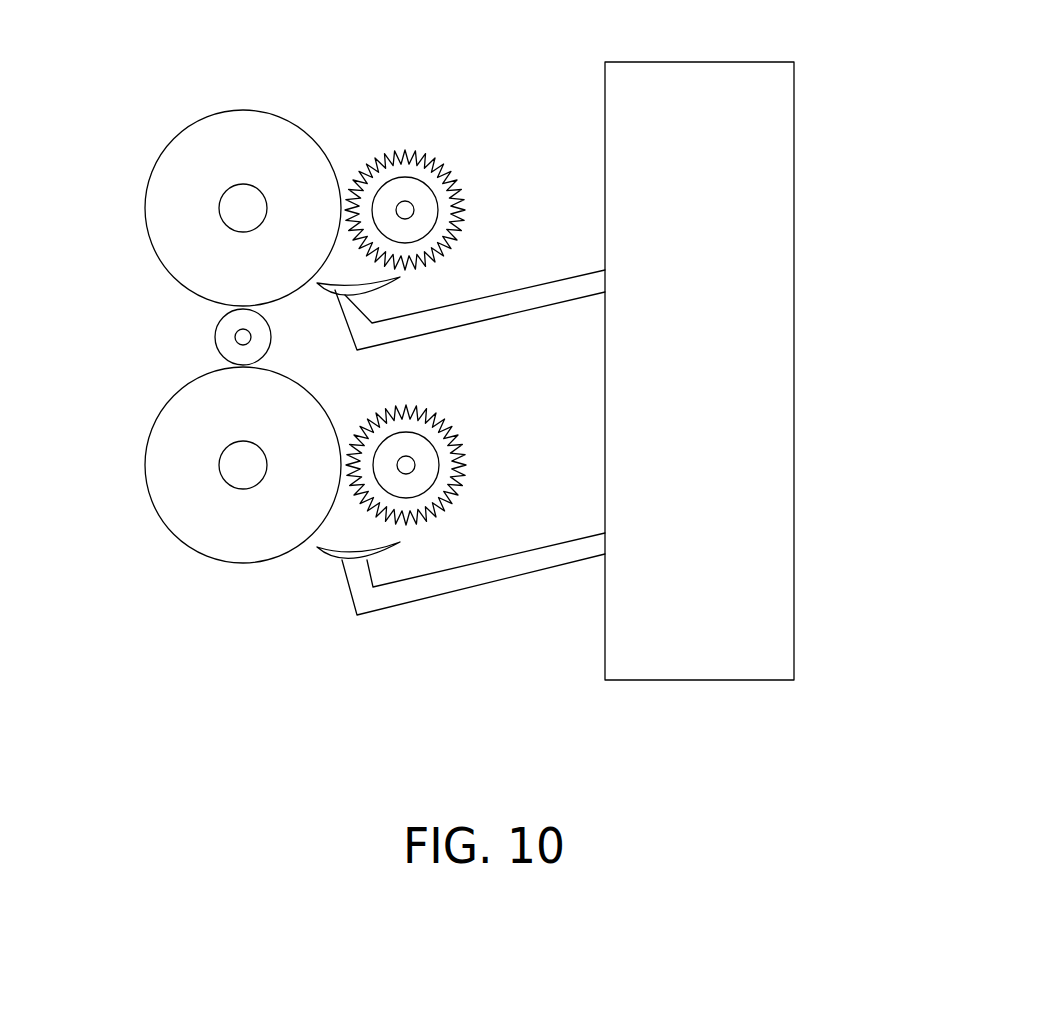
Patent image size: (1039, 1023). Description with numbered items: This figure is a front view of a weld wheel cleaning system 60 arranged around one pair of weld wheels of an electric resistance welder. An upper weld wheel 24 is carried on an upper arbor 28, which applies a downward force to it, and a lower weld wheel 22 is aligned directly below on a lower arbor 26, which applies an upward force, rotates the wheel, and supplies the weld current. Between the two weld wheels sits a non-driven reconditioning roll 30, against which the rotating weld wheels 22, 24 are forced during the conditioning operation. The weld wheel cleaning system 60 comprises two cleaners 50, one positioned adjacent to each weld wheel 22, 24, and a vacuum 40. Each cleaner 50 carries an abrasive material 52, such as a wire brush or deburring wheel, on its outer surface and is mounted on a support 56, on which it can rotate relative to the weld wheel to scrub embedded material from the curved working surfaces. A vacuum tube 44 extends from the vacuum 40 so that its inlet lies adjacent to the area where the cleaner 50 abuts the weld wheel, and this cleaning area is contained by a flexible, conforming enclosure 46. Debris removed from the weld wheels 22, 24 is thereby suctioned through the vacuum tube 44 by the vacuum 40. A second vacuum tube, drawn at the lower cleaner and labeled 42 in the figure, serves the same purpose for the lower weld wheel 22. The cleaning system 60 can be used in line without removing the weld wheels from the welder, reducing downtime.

The lower weld wheel 22 is at (200, 518).
The upper weld wheel 24 is at (173, 192).
The lower arbor 26 is at (238, 464).
The upper arbor 28 is at (241, 205).
The reconditioning roll 30 is at (230, 334).
The vacuum 40 is at (763, 243).
The lower chute 42 is at (440, 583).
The vacuum tube 44 is at (520, 296).
The flexible, conforming enclosure 46 is at (337, 292).
The cleaner 50 is at (425, 203).
The abrasive material 52 is at (385, 157).
The support 56 is at (405, 213).
The weld wheel cleaning system 60 is at (845, 54).